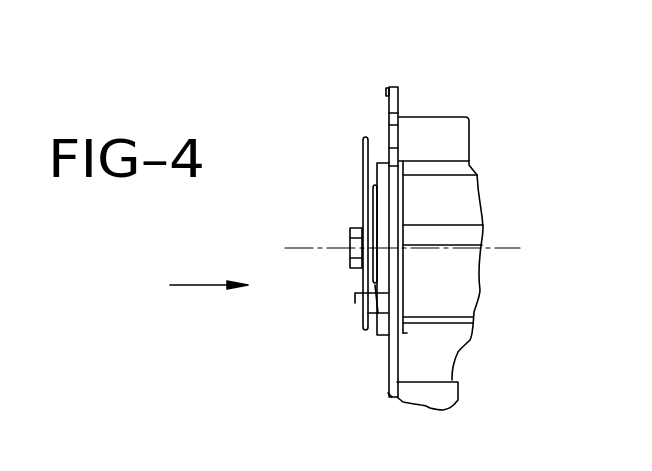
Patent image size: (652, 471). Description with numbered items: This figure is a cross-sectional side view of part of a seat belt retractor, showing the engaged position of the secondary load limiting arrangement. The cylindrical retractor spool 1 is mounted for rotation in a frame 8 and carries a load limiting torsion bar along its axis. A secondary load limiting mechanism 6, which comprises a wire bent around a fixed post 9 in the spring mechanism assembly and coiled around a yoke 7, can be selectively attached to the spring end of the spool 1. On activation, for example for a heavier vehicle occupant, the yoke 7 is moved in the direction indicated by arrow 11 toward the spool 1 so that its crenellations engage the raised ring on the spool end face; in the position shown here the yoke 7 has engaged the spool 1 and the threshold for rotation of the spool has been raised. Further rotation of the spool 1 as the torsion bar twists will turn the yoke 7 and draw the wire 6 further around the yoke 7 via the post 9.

The retractor spool 1 is at (383, 167).
The secondary load limiting mechanism 6 is at (367, 177).
The yoke 7 is at (373, 218).
The frame 8 is at (398, 100).
The fixed post 9 is at (356, 303).
The arrow 11 is at (200, 284).